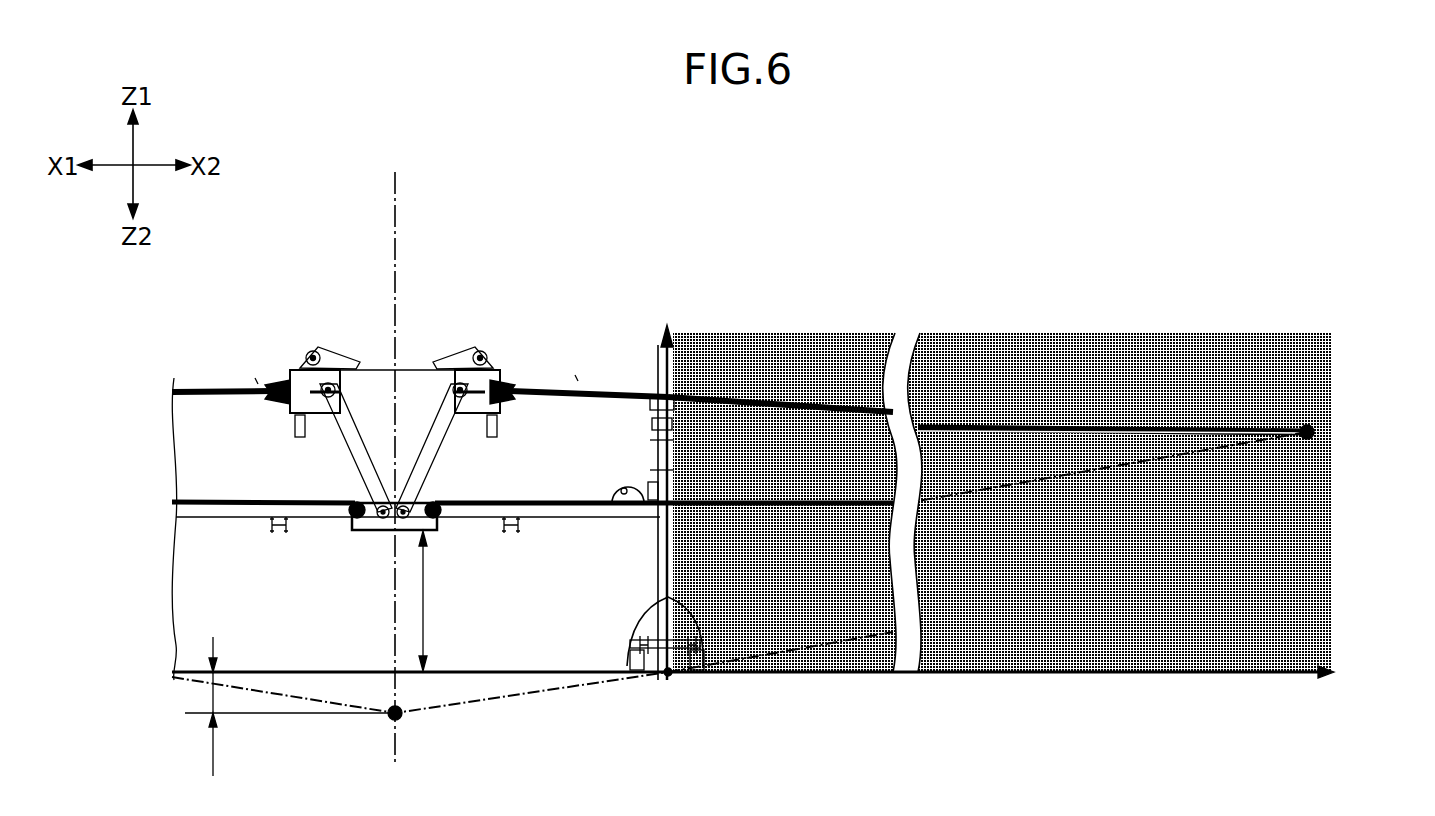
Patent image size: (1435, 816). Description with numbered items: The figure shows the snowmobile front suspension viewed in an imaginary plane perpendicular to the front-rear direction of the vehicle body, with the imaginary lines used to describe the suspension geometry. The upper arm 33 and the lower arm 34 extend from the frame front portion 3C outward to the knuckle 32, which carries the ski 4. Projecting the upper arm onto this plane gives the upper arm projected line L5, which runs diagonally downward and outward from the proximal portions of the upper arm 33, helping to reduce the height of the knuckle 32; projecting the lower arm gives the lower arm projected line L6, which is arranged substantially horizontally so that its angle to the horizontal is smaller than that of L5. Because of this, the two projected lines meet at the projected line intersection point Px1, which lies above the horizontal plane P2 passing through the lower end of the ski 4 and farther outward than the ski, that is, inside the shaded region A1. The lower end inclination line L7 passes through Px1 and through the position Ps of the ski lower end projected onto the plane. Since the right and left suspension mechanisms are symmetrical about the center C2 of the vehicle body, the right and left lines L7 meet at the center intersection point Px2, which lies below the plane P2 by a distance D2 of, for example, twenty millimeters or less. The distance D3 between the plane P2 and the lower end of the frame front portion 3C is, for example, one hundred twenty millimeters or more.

The frame front portion 3C is at (418, 352).
The upper arm 33 is at (258, 382).
The knuckle 32 is at (656, 437).
The lower arm 34 is at (303, 526).
The ski 4 is at (632, 645).
The upper arm projected line L5 is at (200, 386).
The lower arm projected line L6 is at (204, 507).
The lower end inclination line L7 is at (310, 703).
The center in the right-left direction of the vehicle body C2 is at (391, 448).
The distance between the horizontal plane P2 and the center intersection point Px2 D2 is at (195, 707).
The distance between the horizontal plane P2 and the lower end of the frame front po D3 is at (443, 601).
The position of the lower end of the ski projected onto the projection plane Ps is at (668, 682).
The projected line intersection point Px1 is at (1318, 430).
The center intersection point Px2 is at (392, 720).
The horizontal plane P2 is at (1181, 678).
The region A1 is at (1002, 502).